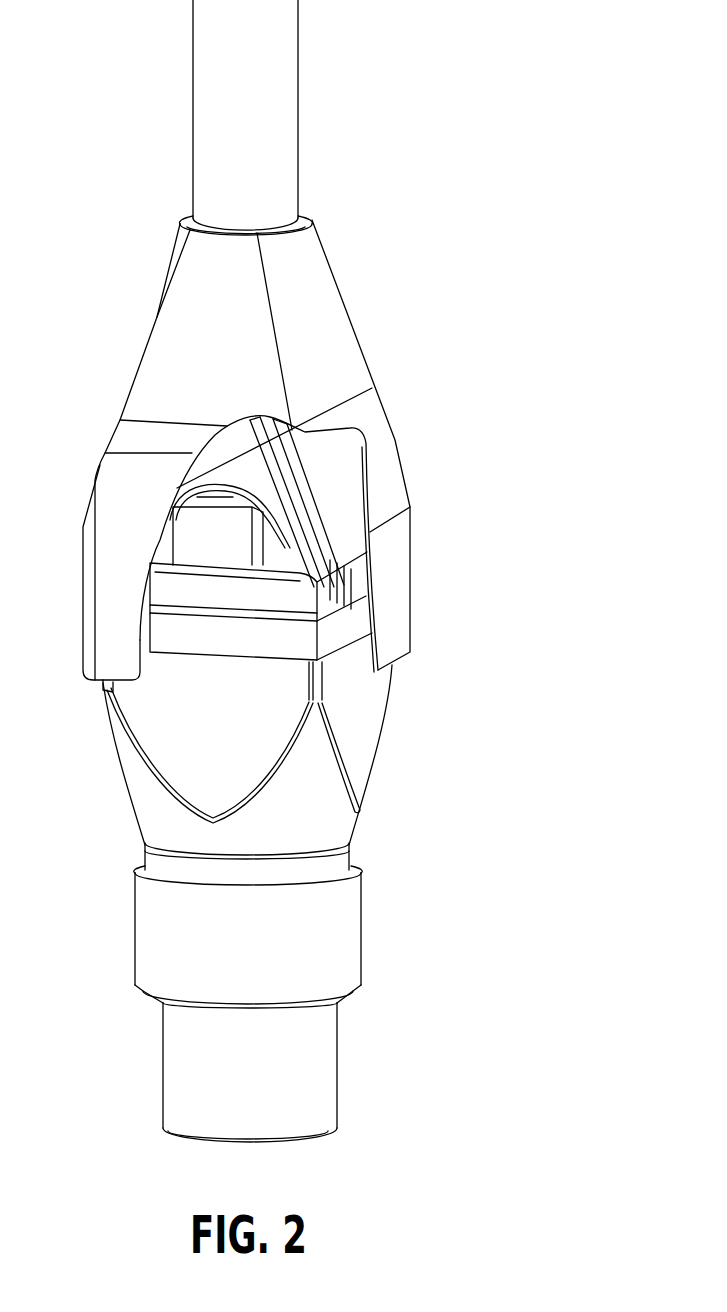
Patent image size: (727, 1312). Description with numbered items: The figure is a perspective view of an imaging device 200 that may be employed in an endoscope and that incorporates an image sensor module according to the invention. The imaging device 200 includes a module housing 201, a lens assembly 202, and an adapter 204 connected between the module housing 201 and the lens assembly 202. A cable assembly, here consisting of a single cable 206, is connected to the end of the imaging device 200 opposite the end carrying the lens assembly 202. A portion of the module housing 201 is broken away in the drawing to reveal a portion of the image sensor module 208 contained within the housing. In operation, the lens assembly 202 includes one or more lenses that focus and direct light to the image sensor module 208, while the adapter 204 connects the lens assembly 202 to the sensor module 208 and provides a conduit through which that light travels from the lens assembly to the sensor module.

The imaging device 200 is at (495, 363).
The module housing 201 is at (123, 475).
The lens assembly 202 is at (177, 1080).
The adapter 204 is at (145, 802).
The cable 206 is at (288, 95).
The image sensor module 208 is at (337, 528).